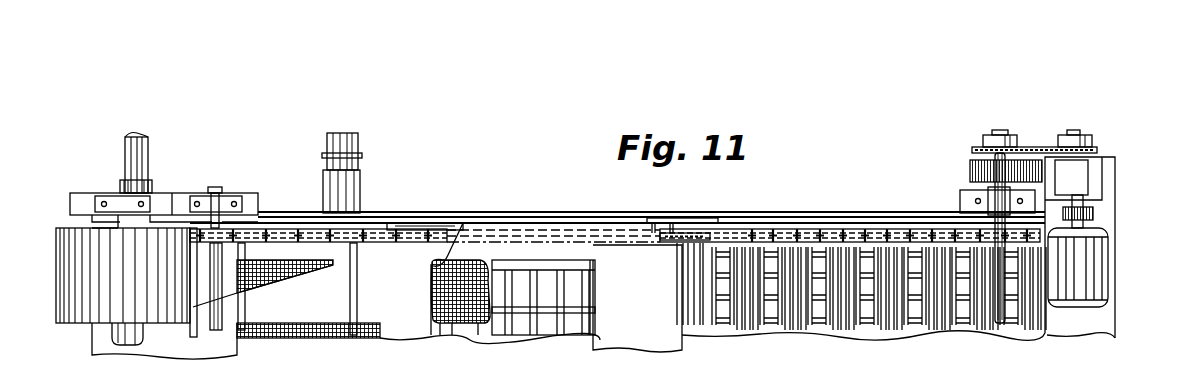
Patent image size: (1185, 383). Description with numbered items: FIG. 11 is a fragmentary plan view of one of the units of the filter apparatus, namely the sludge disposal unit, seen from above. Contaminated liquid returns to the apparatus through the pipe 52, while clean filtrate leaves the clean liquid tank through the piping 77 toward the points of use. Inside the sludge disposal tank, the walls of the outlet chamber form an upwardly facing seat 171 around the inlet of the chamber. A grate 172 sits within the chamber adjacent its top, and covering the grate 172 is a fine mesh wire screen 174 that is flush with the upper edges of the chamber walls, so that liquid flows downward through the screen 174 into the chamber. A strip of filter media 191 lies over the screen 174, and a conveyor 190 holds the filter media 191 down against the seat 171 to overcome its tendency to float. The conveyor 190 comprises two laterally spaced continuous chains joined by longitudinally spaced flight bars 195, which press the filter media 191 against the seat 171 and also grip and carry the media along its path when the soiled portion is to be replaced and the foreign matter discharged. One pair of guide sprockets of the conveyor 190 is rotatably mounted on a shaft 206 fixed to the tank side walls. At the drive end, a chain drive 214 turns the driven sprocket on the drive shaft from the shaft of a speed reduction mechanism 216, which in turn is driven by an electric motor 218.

The pipe 52 is at (150, 155).
The piping 77 is at (362, 141).
The seat 171 is at (590, 320).
The grate 172 is at (588, 290).
The fine mesh wire screen 174 is at (468, 262).
The conveyor 190 is at (867, 217).
The filter media 191 is at (433, 225).
The flight bars 195 is at (293, 301).
The shaft 206 is at (215, 330).
The chain drive 214 is at (1025, 147).
The speed reduction mechanism 216 is at (1083, 178).
The electric motor 218 is at (1107, 280).